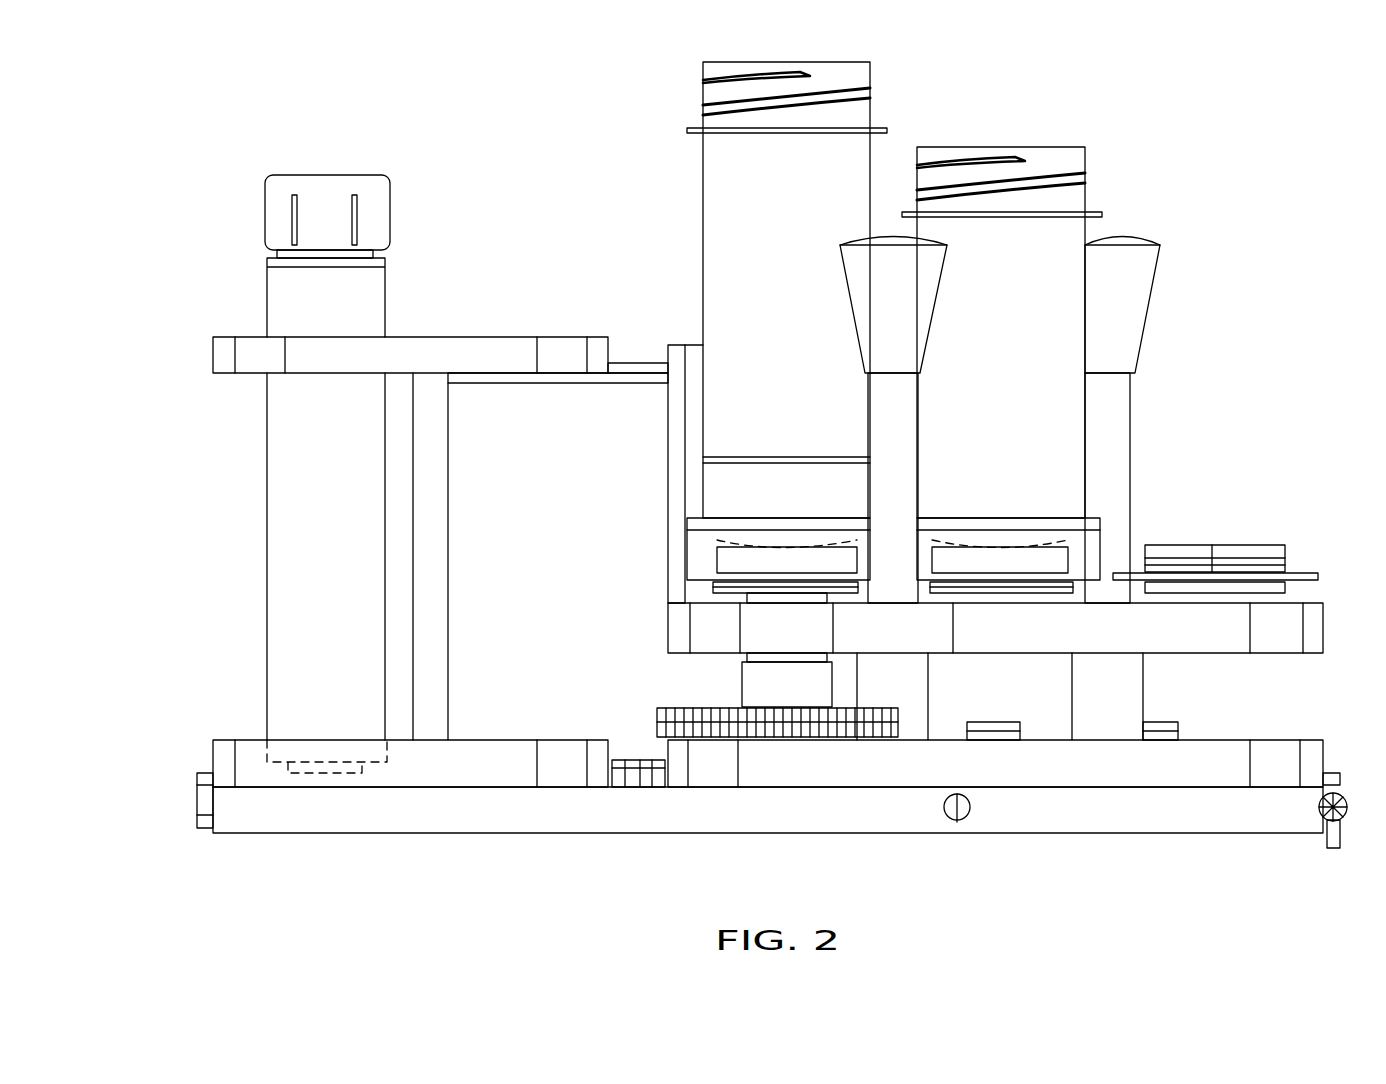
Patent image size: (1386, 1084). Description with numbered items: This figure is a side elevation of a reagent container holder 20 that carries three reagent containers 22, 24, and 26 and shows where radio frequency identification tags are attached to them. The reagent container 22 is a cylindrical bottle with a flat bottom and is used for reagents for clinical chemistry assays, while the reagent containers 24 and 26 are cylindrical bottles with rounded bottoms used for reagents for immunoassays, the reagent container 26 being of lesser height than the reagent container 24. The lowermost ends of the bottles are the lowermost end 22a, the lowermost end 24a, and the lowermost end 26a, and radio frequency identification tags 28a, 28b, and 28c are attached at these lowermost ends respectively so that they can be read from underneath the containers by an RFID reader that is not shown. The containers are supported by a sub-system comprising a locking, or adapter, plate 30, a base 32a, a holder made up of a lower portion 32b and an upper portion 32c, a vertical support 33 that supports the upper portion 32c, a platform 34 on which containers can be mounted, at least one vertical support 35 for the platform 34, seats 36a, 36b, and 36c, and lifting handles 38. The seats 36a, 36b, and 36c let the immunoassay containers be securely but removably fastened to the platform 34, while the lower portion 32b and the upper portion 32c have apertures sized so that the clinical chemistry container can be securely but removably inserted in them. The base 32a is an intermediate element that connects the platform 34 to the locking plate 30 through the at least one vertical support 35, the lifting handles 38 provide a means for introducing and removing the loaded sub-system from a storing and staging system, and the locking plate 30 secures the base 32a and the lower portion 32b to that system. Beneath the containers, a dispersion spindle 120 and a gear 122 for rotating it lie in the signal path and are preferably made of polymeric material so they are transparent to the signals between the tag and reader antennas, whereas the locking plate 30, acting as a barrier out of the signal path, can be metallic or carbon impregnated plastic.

The reagent container holder 20 is at (150, 490).
The reagent container 22 is at (377, 280).
The lowermost end of container 22a is at (275, 748).
The reagent container 24 is at (720, 155).
The lowermost end of container 24a is at (745, 540).
The reagent container 26 is at (1065, 155).
The lowermost end of container 26a is at (1015, 535).
The radio frequency identification tag 28a is at (308, 773).
The radio frequency identification tag 28b is at (780, 580).
The radio frequency identification tag 28c is at (985, 560).
The locking plate 30 is at (1263, 820).
The base 32a is at (1310, 760).
The lower portion of holder 32b is at (488, 755).
The upper portion of holder 32c is at (505, 350).
The vertical support 33 is at (430, 520).
The platform 34 is at (1313, 622).
The vertical support 35 is at (918, 695).
The seat 36a is at (1280, 560).
The seat 36b is at (980, 583).
The seat 36c is at (807, 582).
The lifting handles 38 is at (918, 300).
The dispersion spindle 120 is at (828, 660).
The gear 122 is at (777, 737).